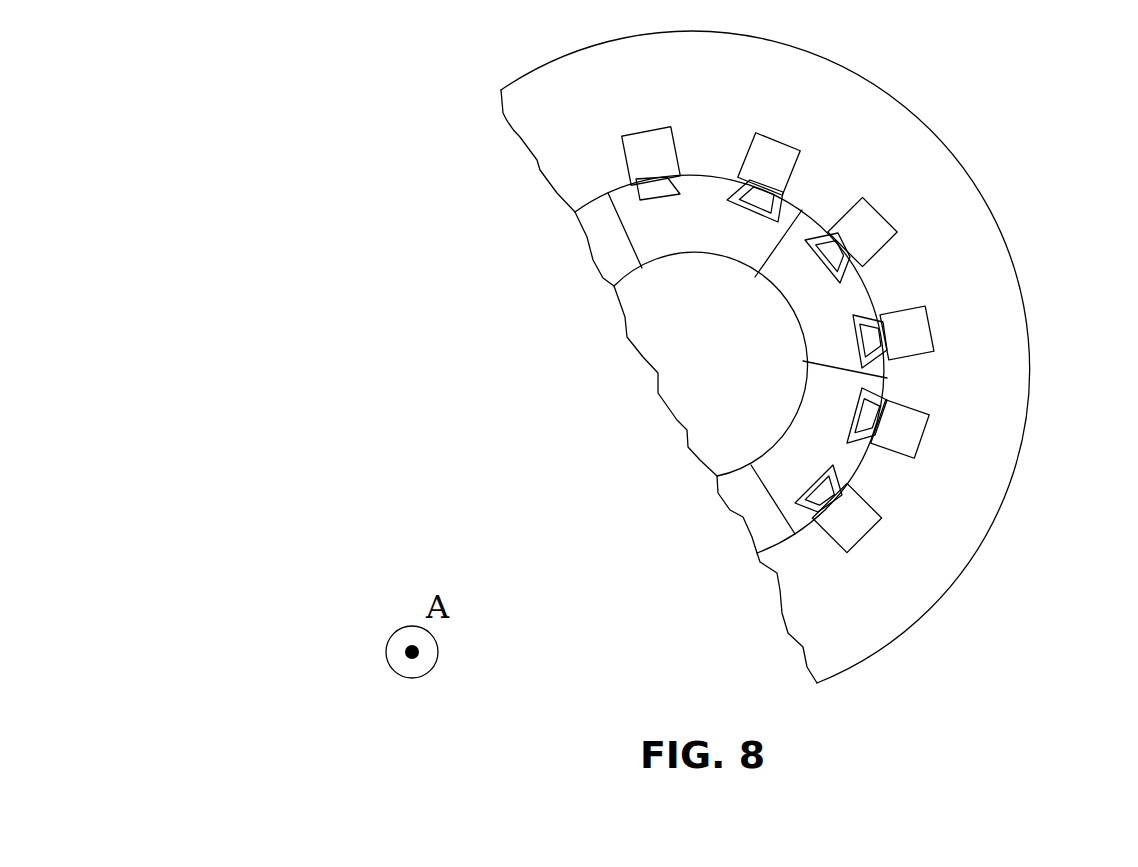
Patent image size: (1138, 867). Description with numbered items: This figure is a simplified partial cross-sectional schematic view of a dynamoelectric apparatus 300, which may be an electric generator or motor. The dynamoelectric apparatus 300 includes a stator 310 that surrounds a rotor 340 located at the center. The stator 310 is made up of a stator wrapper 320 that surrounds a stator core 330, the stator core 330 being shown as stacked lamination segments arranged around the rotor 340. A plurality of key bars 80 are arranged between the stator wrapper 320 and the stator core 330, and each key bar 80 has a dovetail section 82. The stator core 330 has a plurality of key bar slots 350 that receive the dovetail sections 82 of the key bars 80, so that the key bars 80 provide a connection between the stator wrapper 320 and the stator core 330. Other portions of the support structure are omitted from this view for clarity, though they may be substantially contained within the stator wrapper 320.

The dynamoelectric apparatus 300 is at (326, 131).
The stator 310 is at (1030, 189).
The stator wrapper 320 is at (969, 232).
The stator core 330 is at (730, 242).
The rotor 340 is at (735, 372).
The key bar slot 350 is at (888, 381).
The key bar 80 is at (804, 140).
The dovetail section 82 is at (632, 187).